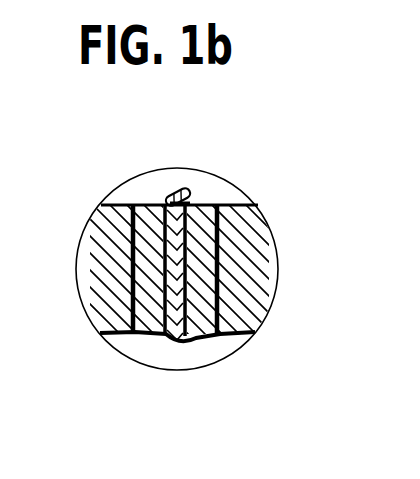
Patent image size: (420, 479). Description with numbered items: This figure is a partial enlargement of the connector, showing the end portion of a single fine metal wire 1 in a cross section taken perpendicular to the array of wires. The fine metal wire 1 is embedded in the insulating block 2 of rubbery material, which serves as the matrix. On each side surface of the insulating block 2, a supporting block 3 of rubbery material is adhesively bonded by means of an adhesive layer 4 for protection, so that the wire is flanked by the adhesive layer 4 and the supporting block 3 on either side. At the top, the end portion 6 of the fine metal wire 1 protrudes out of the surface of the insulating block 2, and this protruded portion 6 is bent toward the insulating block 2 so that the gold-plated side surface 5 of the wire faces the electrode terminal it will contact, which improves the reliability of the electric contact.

The fine metal wire 1 is at (182, 247).
The insulating block 2 is at (203, 275).
The supporting block 3 is at (97, 308).
The adhesive layer 4 is at (132, 336).
The gold-plated side surface 5 is at (168, 195).
The end portion 6 is at (190, 193).